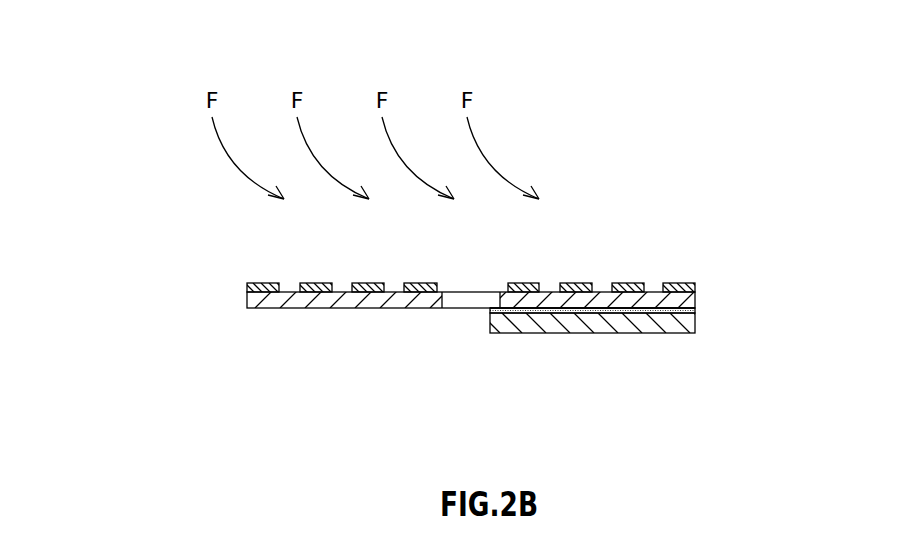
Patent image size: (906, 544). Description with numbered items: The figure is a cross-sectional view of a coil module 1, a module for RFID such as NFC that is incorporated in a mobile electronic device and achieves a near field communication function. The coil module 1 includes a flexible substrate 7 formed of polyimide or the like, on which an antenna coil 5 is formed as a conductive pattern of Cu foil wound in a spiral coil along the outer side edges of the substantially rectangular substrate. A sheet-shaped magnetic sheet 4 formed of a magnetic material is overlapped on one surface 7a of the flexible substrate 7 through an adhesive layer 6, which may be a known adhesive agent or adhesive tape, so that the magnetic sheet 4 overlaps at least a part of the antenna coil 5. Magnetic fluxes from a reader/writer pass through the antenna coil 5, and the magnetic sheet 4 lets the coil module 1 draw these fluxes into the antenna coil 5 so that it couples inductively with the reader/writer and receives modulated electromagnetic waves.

The coil module 1 is at (79, 252).
The magnetic sheet 4 is at (676, 333).
The antenna coil 5 is at (673, 283).
The adhesive layer 6 is at (690, 312).
The flexible substrate 7 is at (688, 300).
The one surface of the flexible substrate 7a is at (550, 310).